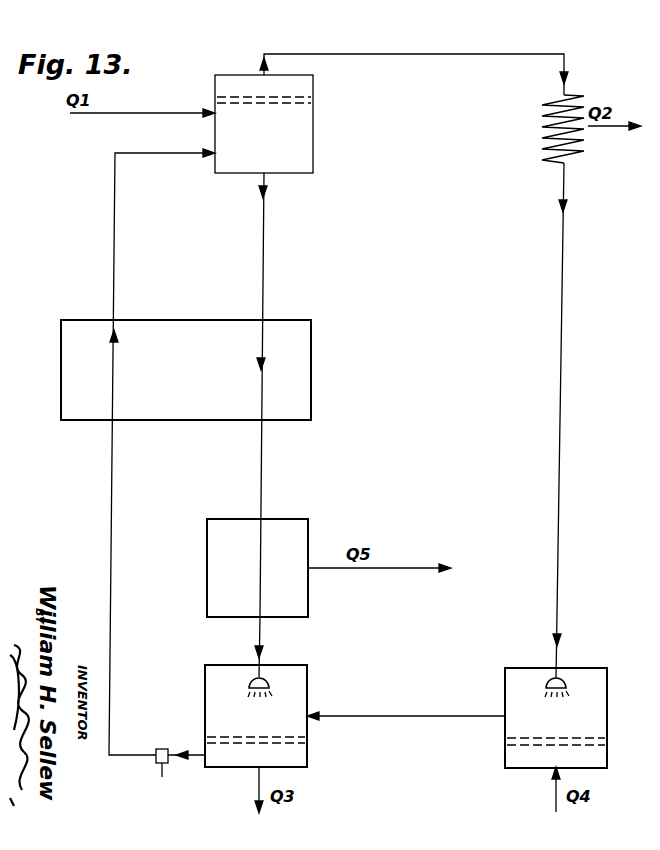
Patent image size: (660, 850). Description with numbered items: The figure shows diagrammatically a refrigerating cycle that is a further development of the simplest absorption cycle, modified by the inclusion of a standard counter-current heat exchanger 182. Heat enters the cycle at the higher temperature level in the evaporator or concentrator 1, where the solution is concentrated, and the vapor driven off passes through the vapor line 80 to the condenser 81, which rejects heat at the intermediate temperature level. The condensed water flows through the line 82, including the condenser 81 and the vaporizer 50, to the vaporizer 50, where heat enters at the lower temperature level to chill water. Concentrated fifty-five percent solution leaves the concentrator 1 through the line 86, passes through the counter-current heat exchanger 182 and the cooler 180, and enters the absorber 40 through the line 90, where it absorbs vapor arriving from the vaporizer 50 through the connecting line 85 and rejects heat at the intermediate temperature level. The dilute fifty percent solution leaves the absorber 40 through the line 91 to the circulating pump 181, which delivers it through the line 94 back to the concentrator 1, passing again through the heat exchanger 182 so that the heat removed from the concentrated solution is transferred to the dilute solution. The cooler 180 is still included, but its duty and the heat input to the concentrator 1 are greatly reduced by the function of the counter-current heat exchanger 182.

The evaporator or concentrator 1 is at (314, 138).
The vapor pipe 80 is at (488, 56).
The condenser 81 is at (543, 153).
The line 82 is at (559, 266).
The line 86 is at (264, 240).
The counter-current heat exchanger 182 is at (311, 338).
The cooler 180 is at (308, 529).
The line 90 is at (262, 636).
The absorber 40 is at (307, 755).
The vaporizer 50 is at (505, 682).
The transfer pipe 85 is at (408, 715).
The line 94 is at (112, 657).
The circulating pump 181 is at (184, 728).
The line 91 is at (198, 762).